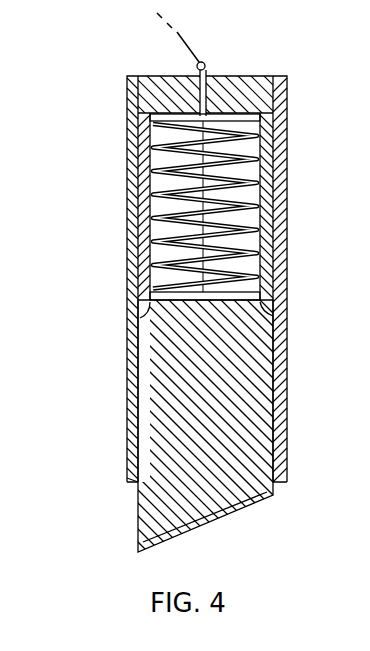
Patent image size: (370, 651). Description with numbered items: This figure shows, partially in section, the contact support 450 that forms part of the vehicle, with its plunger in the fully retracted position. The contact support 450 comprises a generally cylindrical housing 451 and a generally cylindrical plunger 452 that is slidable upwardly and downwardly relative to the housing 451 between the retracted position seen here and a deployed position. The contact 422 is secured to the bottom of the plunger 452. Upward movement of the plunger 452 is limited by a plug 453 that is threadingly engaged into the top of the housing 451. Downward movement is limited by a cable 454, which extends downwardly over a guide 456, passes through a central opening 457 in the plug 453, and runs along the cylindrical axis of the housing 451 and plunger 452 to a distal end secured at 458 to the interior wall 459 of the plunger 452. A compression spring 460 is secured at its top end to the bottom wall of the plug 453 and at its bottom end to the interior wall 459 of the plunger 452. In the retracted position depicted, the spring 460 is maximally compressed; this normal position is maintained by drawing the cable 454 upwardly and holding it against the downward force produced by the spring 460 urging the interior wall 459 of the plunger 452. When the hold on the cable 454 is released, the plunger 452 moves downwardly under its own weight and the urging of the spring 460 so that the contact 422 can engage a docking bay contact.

The contact support 450 is at (116, 127).
The housing 451 is at (277, 231).
The plunger 452 is at (257, 394).
The plug 453 is at (255, 90).
The cable 454 is at (184, 42).
The guide 456 is at (197, 66).
The central opening 457 is at (208, 76).
The cable securement point 458 is at (238, 322).
The interior wall 459 is at (140, 322).
The compression spring 460 is at (150, 192).
The contact 422 is at (222, 522).